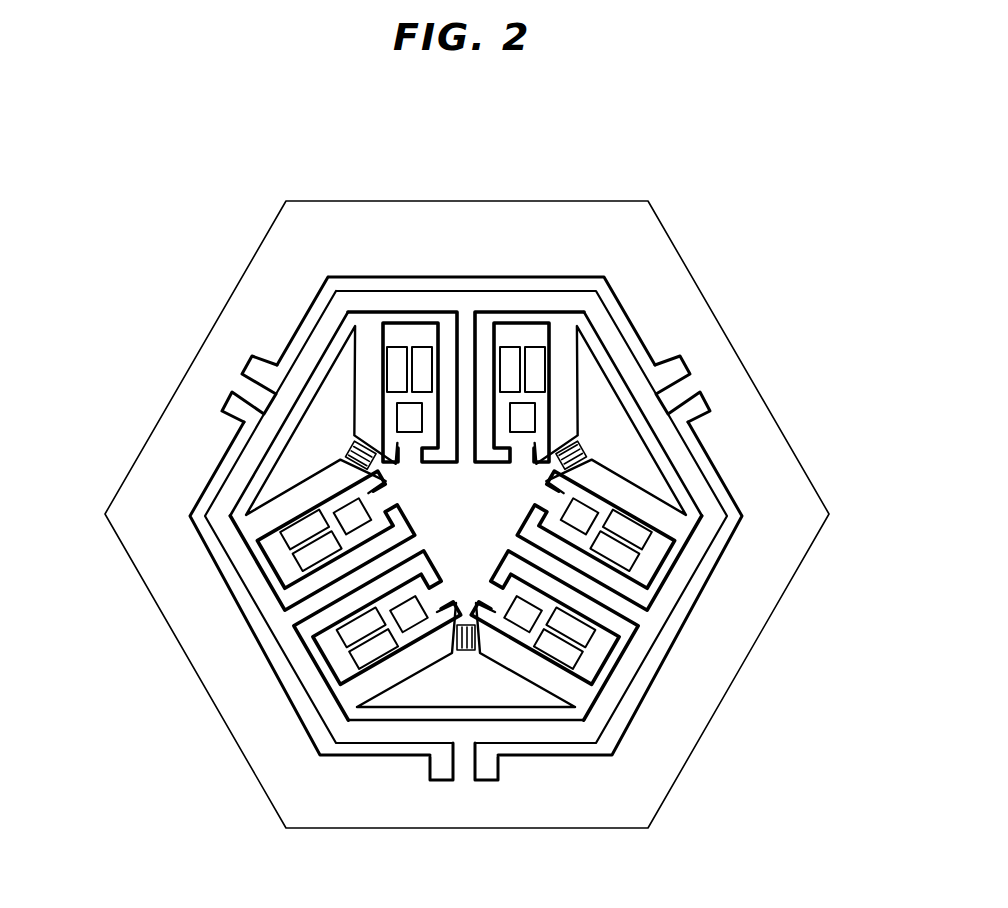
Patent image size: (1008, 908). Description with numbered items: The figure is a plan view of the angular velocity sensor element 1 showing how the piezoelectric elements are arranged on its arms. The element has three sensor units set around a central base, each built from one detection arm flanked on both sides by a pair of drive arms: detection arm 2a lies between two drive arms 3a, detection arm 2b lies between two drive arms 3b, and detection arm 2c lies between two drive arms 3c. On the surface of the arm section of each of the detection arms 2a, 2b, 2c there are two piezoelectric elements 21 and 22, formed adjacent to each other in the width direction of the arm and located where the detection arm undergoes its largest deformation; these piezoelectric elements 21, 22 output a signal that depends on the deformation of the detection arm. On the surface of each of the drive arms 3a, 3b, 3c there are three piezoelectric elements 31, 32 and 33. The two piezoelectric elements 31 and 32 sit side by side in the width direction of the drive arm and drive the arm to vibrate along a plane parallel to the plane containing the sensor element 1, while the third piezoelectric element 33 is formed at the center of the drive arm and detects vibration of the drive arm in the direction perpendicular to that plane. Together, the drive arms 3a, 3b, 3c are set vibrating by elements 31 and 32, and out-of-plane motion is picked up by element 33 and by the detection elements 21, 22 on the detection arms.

The angular velocity sensor element 1 is at (96, 127).
The detection arm 2a is at (610, 420).
The detection arm 2b is at (322, 413).
The detection arm 2c is at (452, 680).
The piezoelectric element 21 is at (350, 445).
The piezoelectric element 22 is at (264, 376).
The drive arm 3a is at (520, 333).
The drive arm 3b is at (412, 333).
The drive arm 3c is at (400, 612).
The piezoelectric element 31 is at (385, 373).
The piezoelectric element 32 is at (430, 358).
The piezoelectric element 33 is at (408, 417).